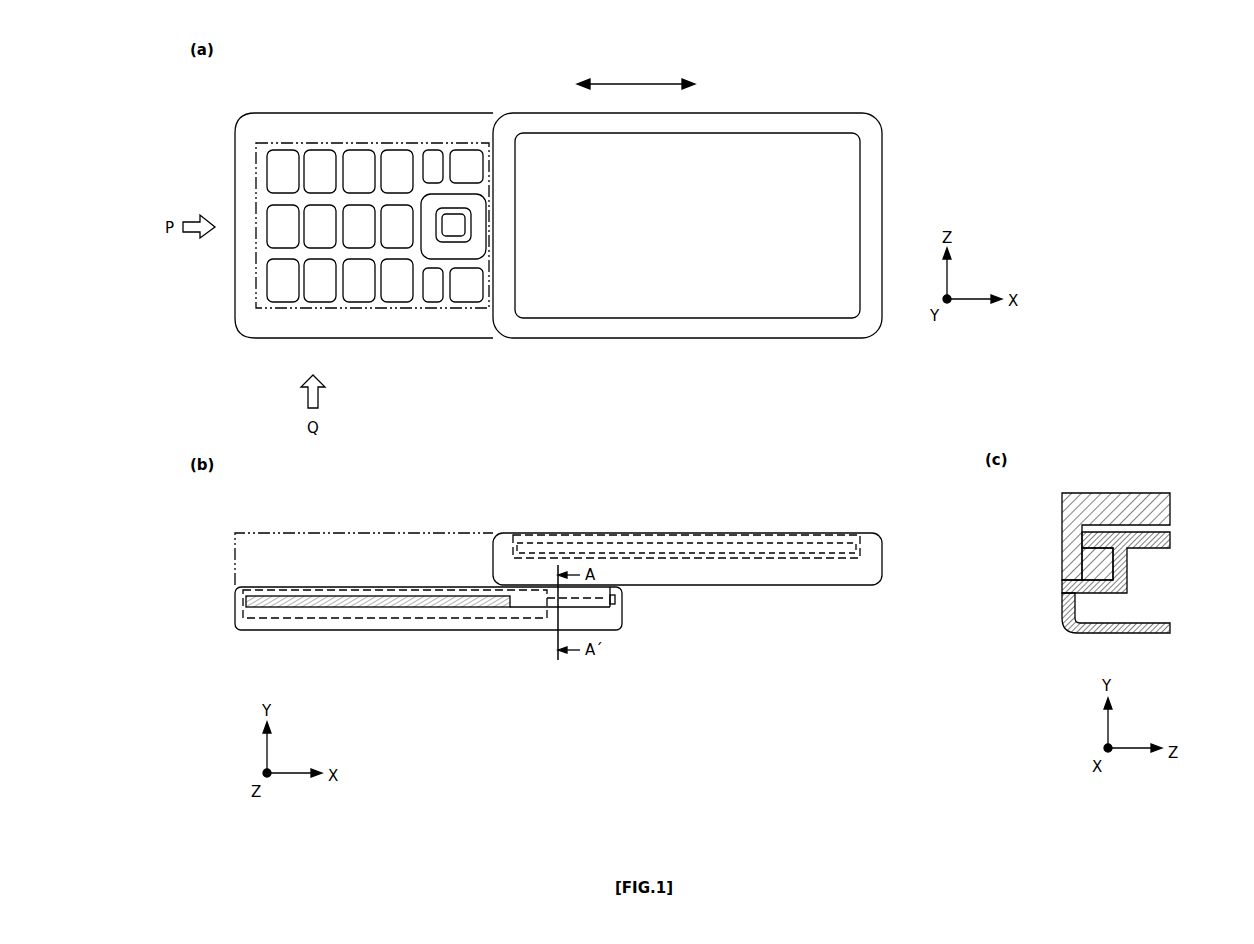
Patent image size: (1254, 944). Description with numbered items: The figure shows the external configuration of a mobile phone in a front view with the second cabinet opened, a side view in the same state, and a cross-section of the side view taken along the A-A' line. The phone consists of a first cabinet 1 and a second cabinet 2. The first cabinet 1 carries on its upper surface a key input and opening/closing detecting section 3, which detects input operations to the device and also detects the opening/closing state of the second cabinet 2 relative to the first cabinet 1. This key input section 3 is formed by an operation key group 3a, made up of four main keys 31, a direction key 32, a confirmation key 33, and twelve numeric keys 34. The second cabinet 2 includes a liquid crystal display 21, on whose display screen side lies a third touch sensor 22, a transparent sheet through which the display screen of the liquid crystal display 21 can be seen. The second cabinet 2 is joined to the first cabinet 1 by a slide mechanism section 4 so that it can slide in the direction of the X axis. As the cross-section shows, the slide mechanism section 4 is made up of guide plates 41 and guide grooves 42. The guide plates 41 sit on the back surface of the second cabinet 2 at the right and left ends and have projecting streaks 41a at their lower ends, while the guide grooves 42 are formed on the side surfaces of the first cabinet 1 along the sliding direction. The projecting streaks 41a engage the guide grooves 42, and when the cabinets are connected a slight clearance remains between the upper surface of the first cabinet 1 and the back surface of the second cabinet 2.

The first cabinet 1 is at (288, 340).
The second cabinet 2 is at (602, 340).
The key input and opening/closing detecting section 3 is at (350, 620).
The operation key group 3a is at (256, 228).
The slide mechanism section 4 is at (600, 615).
The liquid crystal display 21 is at (788, 318).
The third touch sensor 22 is at (677, 290).
The main keys 31 is at (433, 165).
The direction key 32 is at (478, 233).
The confirmation key 33 is at (457, 222).
The numeric keys 34 is at (325, 222).
The guide plates 41 is at (605, 595).
The projecting streaks 41a is at (1095, 563).
The guide grooves 42 is at (437, 600).